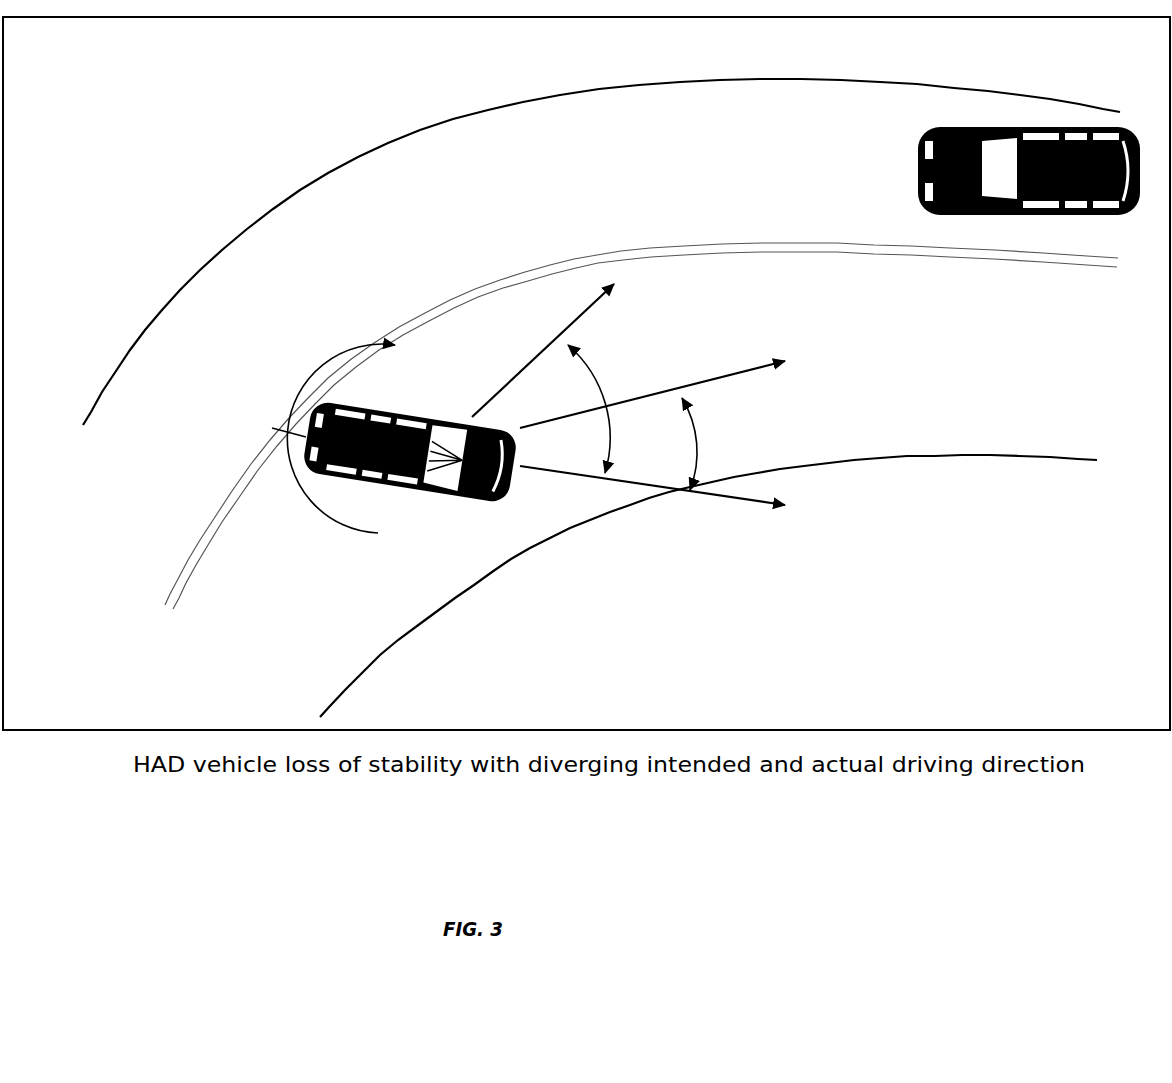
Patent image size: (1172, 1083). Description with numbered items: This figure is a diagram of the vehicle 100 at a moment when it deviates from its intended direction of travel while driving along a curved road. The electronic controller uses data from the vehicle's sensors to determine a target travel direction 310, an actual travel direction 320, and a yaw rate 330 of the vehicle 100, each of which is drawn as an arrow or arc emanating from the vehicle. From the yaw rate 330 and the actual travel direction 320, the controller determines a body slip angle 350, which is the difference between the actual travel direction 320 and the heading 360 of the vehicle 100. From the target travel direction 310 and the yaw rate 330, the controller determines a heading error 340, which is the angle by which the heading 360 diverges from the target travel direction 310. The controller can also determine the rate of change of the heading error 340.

The vehicle 100 is at (418, 502).
The target travel direction 310 is at (1025, 347).
The actual travel direction 320 is at (780, 240).
The yaw rate 330 is at (377, 313).
The heading error 340 is at (893, 426).
The body slip angle 350 is at (725, 328).
The heading 360 is at (800, 507).